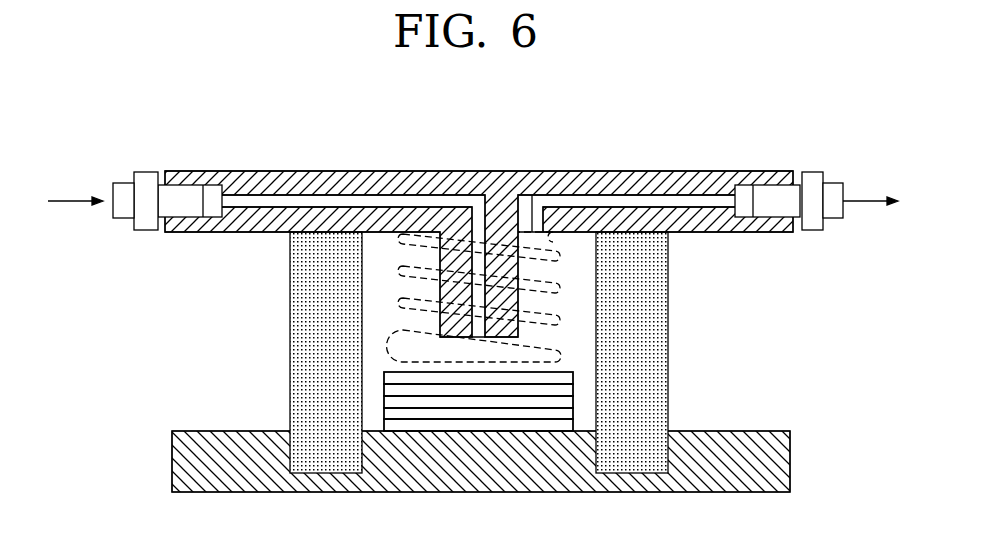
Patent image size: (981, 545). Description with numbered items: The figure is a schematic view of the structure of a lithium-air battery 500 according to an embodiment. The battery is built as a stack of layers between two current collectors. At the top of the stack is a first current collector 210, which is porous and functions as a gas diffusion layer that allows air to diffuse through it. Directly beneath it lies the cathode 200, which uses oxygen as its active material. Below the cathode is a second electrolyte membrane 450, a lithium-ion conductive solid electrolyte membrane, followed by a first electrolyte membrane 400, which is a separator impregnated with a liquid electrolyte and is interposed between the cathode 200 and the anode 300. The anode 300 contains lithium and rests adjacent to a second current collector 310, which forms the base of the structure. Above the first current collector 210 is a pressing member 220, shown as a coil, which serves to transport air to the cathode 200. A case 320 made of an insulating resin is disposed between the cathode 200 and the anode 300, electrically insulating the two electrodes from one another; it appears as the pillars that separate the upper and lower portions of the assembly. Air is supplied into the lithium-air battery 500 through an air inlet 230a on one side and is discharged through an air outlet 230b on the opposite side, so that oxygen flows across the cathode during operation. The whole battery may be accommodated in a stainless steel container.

The lithium-air battery 500 is at (186, 134).
The air inlet 230a is at (127, 211).
The air outlet 230b is at (830, 212).
The pressing member 220 is at (557, 290).
The case 320 is at (293, 328).
The second current collector 310 is at (182, 462).
The first current collector 210 is at (577, 378).
The cathode 200 is at (577, 390).
The second electrolyte membrane 450 is at (577, 402).
The first electrolyte membrane 400 is at (577, 413).
The anode 300 is at (580, 427).